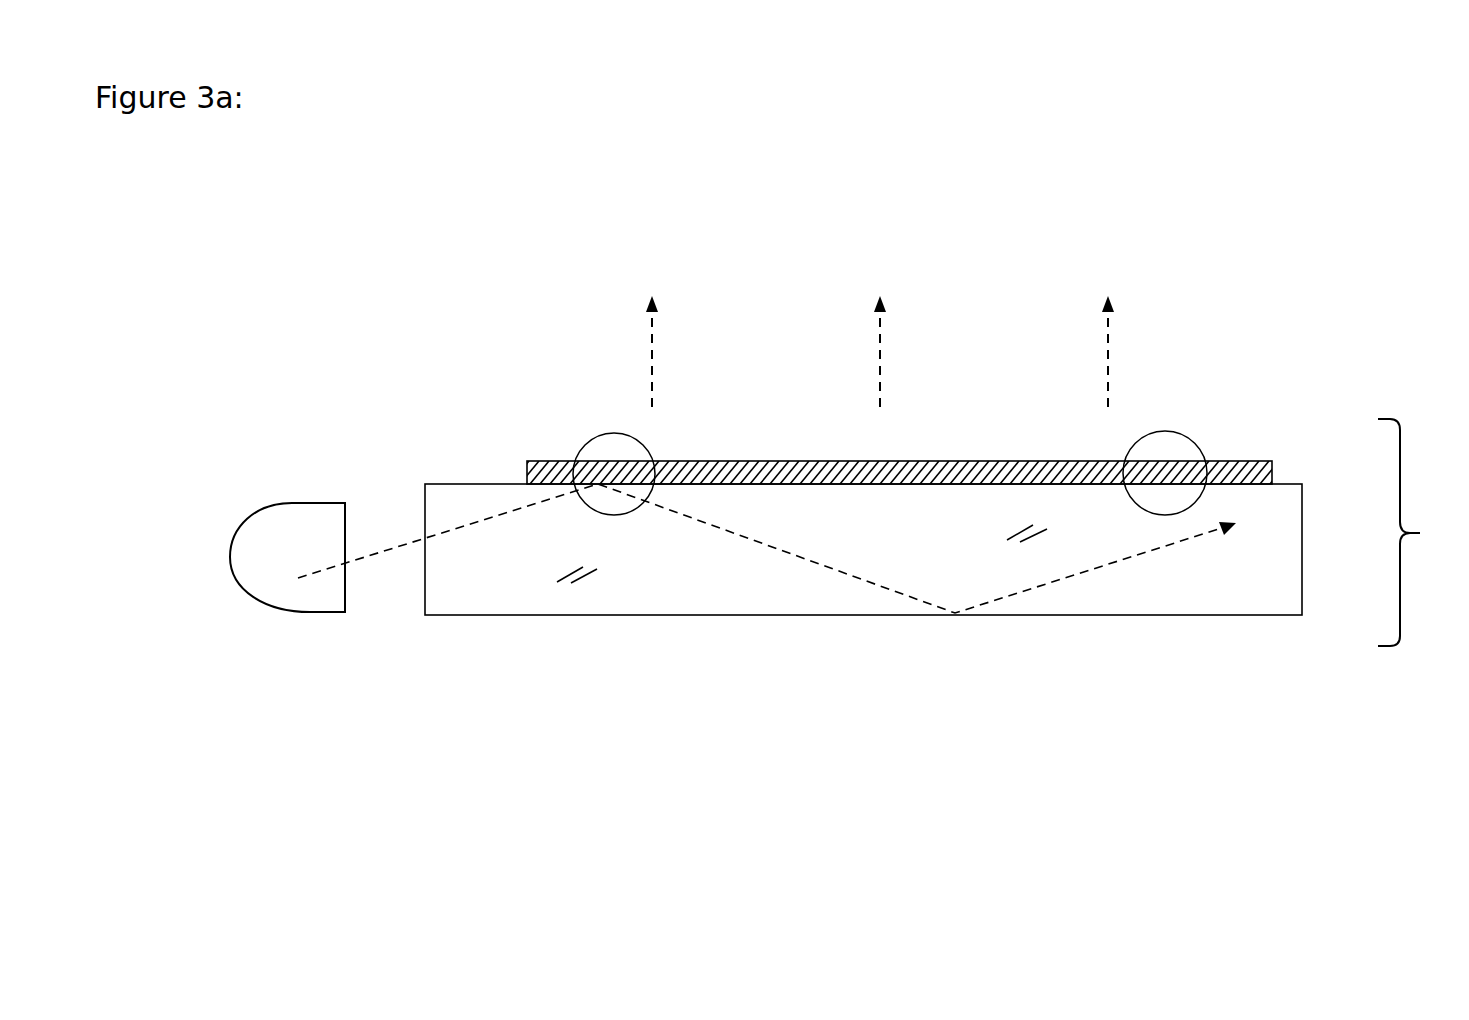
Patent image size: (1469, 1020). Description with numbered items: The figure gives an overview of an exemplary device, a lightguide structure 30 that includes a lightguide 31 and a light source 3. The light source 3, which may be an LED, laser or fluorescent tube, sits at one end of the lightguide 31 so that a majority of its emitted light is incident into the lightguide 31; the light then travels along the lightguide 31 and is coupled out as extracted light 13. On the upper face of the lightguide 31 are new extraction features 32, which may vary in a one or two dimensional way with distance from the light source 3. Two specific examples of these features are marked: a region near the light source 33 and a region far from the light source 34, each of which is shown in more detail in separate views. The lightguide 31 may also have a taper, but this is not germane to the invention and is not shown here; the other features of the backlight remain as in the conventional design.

The light source 3 is at (300, 522).
The emitted light 13 is at (880, 358).
The lightguide structure 30 is at (1423, 532).
The lightguide 31 is at (475, 497).
The extraction features 32 is at (863, 460).
The region near the light source 33 is at (605, 427).
The region far from the light source 34 is at (1165, 432).